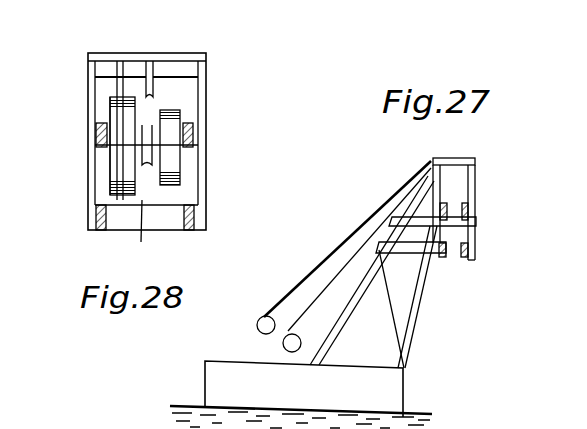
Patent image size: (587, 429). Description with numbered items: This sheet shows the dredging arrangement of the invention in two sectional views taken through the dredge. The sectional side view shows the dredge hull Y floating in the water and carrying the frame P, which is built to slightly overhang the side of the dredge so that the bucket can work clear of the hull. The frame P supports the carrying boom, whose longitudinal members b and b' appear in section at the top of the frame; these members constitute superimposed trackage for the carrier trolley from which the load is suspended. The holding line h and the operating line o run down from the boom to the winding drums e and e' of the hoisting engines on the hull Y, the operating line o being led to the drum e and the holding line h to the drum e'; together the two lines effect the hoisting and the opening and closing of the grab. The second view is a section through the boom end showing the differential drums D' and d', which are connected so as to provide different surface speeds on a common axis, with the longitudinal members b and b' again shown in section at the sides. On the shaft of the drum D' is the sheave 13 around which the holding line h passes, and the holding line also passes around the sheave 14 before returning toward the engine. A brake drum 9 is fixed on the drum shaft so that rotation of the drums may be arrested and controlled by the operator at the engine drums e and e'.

In FIG. 28, the brake drum 9 is at (113, 72).
In FIG. 28, the differential drum D' is at (131, 103).
In FIG. 28, the differential drum d' is at (180, 96).
In FIG. 28, the sheave 14 is at (148, 70).
In FIG. 27, the longitudinal member b' is at (470, 198).
In FIG. 28, the longitudinal member b' is at (146, 133).
In FIG. 27, the longitudinal member b is at (456, 267).
In FIG. 28, the longitudinal member b is at (141, 230).
In FIG. 28, the sheave 13 is at (139, 229).
In FIG. 27, the operating line o is at (347, 239).
In FIG. 27, the holding line h is at (359, 249).
In FIG. 27, the winding drum e is at (252, 325).
In FIG. 27, the winding drum e' is at (277, 349).
In FIG. 27, the frame P is at (341, 332).
In FIG. 27, the hull Y is at (304, 389).